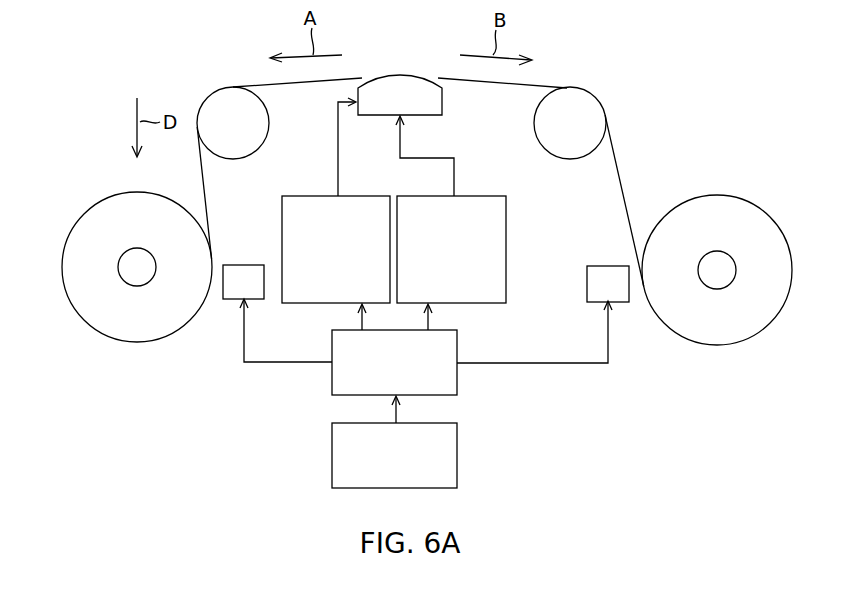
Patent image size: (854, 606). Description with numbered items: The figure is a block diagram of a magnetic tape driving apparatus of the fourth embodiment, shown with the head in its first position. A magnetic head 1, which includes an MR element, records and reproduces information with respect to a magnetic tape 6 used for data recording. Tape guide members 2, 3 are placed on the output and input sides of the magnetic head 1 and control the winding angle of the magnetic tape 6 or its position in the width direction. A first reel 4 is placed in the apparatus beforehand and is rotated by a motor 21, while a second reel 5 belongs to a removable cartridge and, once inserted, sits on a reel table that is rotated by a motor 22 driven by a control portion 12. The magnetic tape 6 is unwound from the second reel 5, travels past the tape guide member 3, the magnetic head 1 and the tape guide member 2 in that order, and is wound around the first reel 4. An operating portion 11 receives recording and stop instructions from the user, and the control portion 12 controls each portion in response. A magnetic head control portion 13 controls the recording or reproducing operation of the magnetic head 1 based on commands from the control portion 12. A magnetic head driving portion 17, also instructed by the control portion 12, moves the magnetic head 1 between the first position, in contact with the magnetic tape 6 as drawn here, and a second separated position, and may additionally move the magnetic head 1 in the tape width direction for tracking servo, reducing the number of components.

The magnetic head 1 is at (443, 100).
The tape guide member 2 is at (215, 90).
The tape guide member 3 is at (597, 95).
The first reel 4 is at (137, 342).
The second reel 5 is at (717, 345).
The magnetic tape 6 is at (621, 181).
The operating portion 11 is at (458, 443).
The control portion 12 is at (458, 343).
The magnetic head control portion 13 is at (473, 198).
The magnetic head driving portion 17 is at (355, 197).
The motor 21 is at (243, 265).
The motor 22 is at (608, 266).